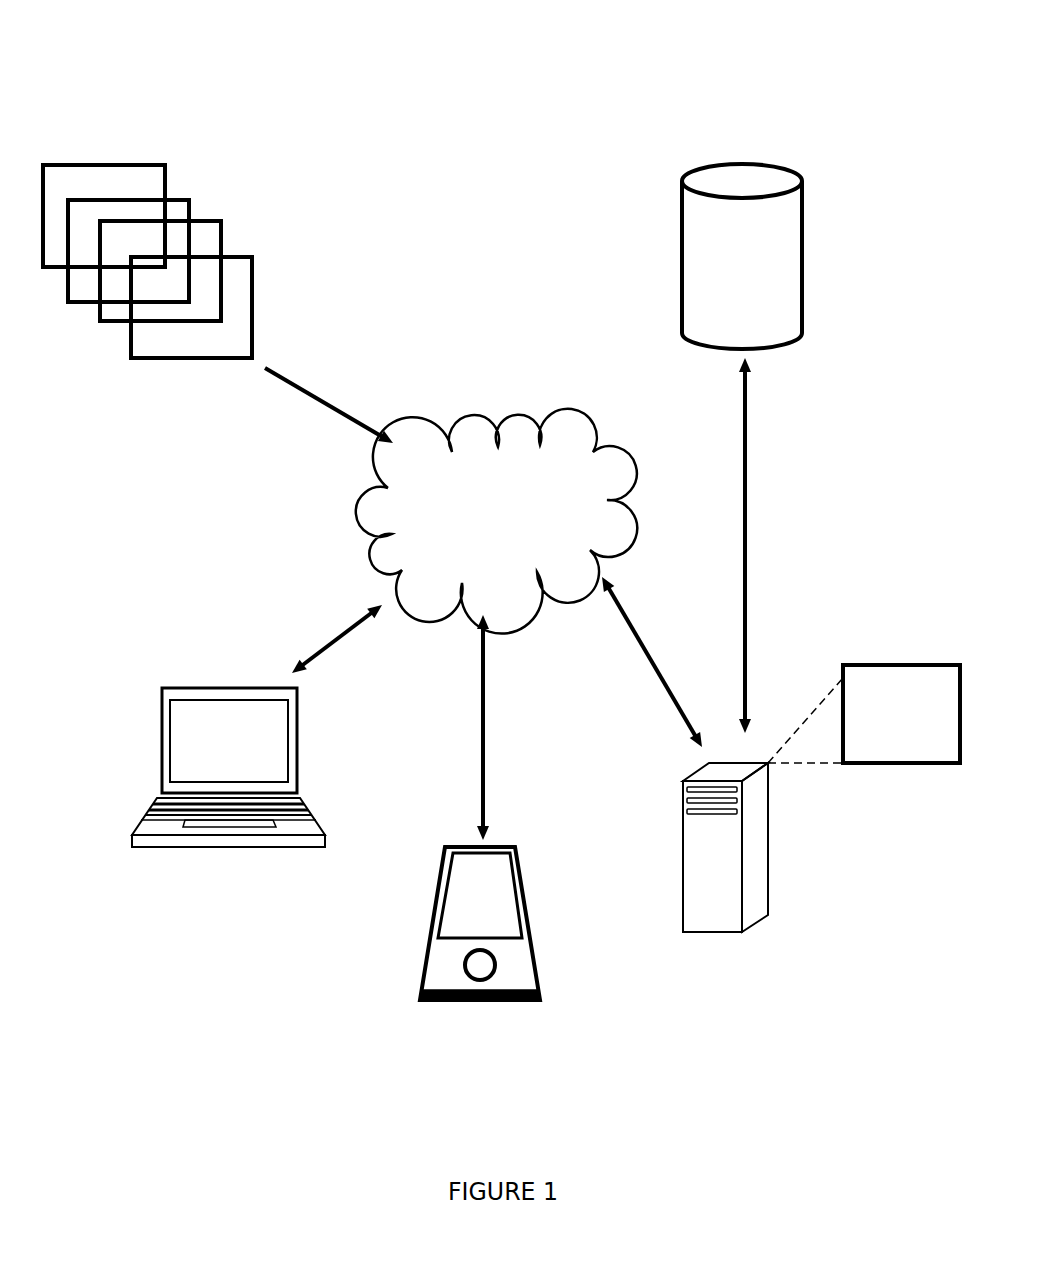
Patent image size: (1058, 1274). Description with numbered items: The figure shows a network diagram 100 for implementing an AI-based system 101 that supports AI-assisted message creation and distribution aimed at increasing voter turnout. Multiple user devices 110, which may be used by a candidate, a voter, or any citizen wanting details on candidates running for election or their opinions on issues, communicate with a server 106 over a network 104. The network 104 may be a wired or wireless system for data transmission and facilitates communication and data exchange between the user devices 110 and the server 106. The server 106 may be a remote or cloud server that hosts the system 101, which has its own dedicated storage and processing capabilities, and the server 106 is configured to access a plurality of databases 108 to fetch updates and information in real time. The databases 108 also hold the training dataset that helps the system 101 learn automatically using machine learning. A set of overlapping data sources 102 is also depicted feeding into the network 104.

The network diagram 100 is at (563, 108).
The AI-based system 101 is at (864, 714).
The data sources 102 is at (158, 160).
The network 104 is at (496, 521).
The server 106 is at (745, 877).
The databases 108 is at (742, 256).
The user devices 110 is at (447, 848).